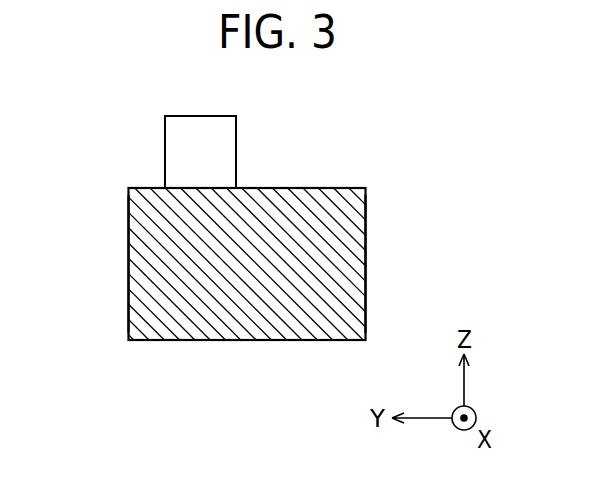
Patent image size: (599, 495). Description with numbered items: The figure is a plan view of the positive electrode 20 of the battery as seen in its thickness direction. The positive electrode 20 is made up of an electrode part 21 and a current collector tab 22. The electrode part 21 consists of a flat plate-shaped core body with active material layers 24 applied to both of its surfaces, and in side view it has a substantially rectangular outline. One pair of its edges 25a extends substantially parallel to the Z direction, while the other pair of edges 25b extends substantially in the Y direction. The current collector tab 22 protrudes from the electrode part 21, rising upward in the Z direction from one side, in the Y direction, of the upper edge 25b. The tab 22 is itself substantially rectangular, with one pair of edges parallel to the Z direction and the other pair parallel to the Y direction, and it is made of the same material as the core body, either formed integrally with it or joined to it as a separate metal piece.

The positive electrode 20 is at (293, 134).
The electrode part 21 is at (142, 285).
The current collector tab 22 is at (200, 126).
The active material layers 24 is at (202, 327).
The edges 25a is at (128, 238).
The edges 25b is at (330, 188).